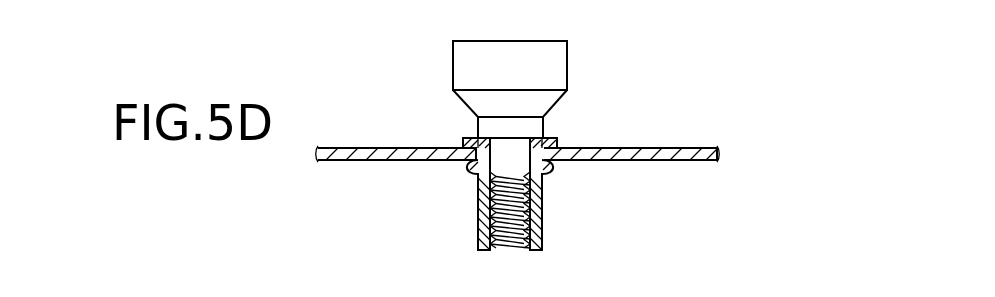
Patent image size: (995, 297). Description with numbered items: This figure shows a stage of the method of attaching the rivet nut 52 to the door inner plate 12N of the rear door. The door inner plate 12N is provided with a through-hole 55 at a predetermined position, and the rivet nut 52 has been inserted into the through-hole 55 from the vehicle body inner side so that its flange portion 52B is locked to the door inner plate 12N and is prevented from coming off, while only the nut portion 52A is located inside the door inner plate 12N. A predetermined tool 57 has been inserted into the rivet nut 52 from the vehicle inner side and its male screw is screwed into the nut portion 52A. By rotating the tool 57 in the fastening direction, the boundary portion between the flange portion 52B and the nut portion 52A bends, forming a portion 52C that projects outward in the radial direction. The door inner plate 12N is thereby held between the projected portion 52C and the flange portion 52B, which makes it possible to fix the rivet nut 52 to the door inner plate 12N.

The tool 57 is at (553, 62).
The door inner plate 12N is at (688, 148).
The rivet nut 52 is at (522, 185).
The nut portion 52A is at (542, 220).
The flange portion 52B is at (550, 138).
The projected portion 52C is at (467, 168).
The through-hole 55 is at (525, 180).